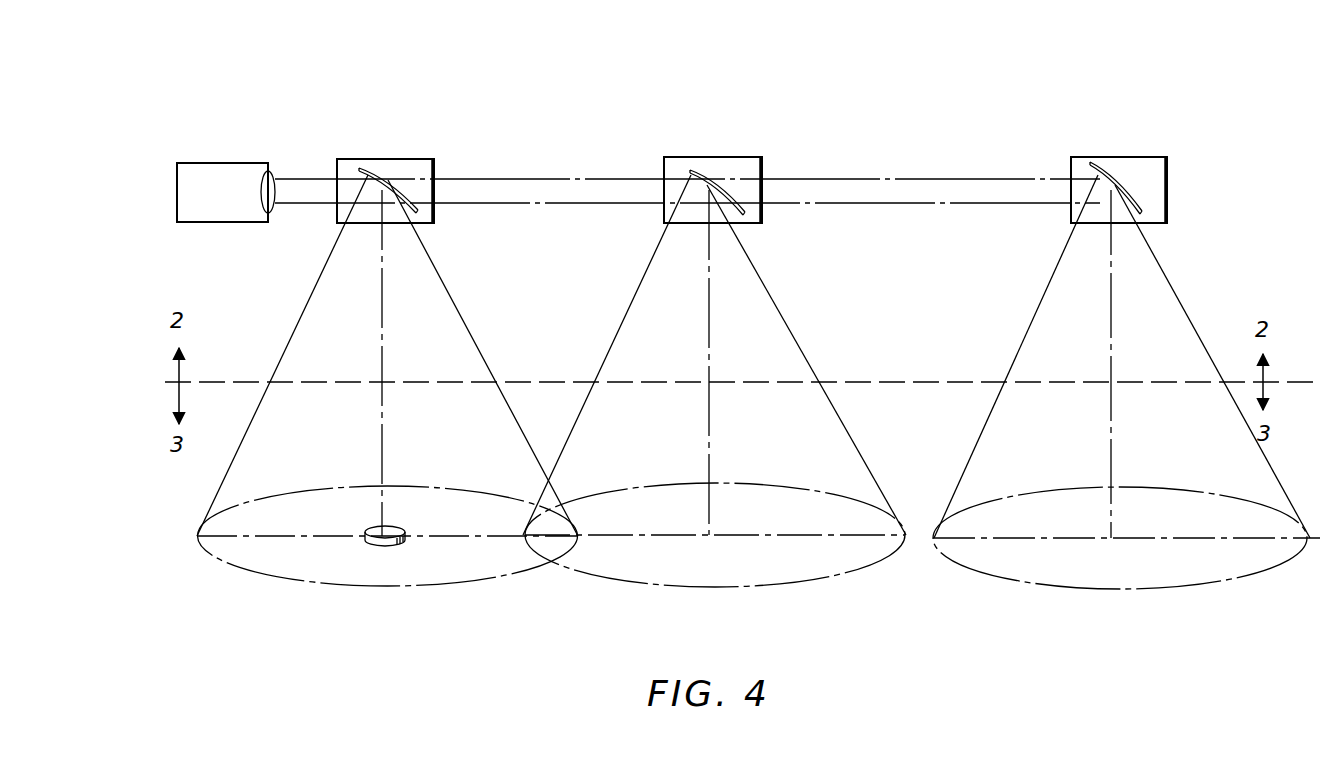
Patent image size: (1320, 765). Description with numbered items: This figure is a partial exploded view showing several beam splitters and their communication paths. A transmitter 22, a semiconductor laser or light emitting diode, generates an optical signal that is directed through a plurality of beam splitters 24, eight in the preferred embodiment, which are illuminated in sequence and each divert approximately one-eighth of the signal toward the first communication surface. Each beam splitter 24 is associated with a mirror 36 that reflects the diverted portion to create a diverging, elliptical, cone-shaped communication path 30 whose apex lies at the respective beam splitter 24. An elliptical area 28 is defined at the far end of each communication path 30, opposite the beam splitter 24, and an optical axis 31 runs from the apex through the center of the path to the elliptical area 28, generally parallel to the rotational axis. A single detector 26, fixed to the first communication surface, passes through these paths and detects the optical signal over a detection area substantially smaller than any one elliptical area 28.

The transmitter 22 is at (236, 163).
The beam splitter 24 is at (398, 160).
The mirror 36 is at (361, 168).
The communication path 30 is at (292, 331).
The optical axis 31 is at (383, 292).
The elliptical area 28 is at (375, 584).
The detector 26 is at (398, 547).